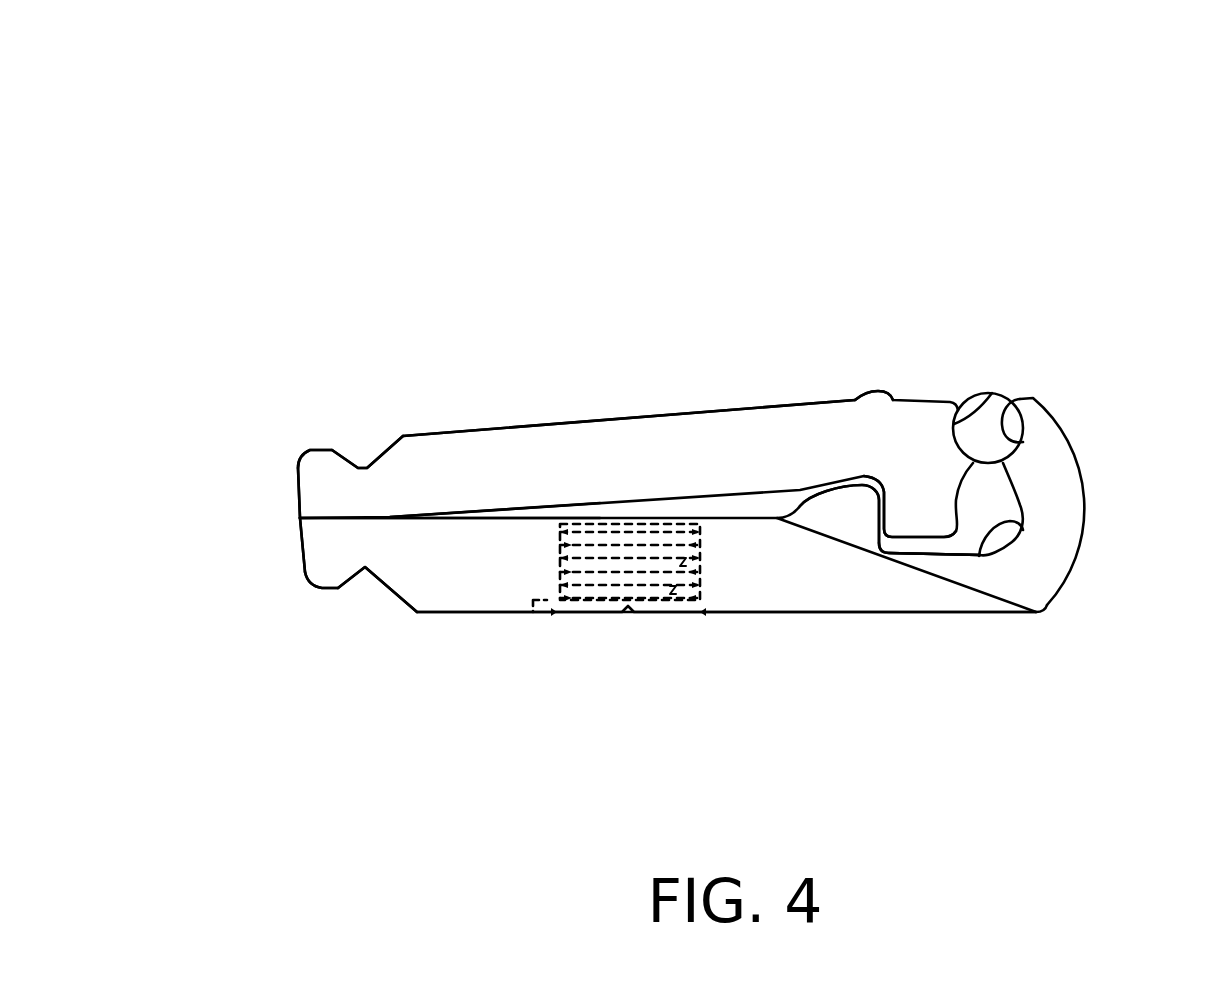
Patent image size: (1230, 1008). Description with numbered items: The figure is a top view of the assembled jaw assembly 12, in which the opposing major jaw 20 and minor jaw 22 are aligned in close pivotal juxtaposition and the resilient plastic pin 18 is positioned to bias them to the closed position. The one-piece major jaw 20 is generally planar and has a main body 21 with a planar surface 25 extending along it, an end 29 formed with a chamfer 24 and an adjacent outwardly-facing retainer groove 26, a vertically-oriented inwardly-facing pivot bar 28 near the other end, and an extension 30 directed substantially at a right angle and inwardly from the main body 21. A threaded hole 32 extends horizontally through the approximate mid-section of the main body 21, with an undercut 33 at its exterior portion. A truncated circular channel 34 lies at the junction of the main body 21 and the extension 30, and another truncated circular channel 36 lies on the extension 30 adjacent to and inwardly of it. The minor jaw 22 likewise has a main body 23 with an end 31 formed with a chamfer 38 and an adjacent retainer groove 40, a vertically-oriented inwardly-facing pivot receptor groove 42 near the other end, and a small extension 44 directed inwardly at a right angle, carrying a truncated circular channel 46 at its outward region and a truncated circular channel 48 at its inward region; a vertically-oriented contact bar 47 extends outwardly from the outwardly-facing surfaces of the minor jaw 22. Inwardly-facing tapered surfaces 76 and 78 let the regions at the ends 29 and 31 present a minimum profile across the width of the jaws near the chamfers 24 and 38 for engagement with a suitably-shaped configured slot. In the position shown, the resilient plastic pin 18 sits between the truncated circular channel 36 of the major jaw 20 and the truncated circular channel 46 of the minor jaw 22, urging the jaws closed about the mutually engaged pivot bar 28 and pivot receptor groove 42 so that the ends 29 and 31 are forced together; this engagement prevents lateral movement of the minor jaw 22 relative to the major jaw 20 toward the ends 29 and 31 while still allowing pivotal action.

The jaw assembly 12 is at (223, 173).
The resilient plastic pin 18 is at (1007, 400).
The major jaw 20 is at (772, 615).
The main body 21 is at (762, 580).
The minor jaw 22 is at (670, 402).
The main body 23 is at (703, 437).
The chamfer 24 is at (315, 582).
The planar surface 25 is at (880, 613).
The retainer groove 26 is at (372, 572).
The pivot bar 28 is at (867, 510).
The end 29 is at (302, 545).
The extension 30 is at (1060, 556).
The end 31 is at (300, 490).
The threaded hole 32 is at (655, 615).
The undercut 33 is at (536, 602).
The truncated circular channel 34 is at (980, 558).
The truncated circular channel 36 is at (1010, 400).
The chamfer 38 is at (308, 452).
The retainer groove 40 is at (365, 462).
The pivot receptor groove 42 is at (892, 400).
The small extension 44 is at (922, 520).
The truncated circular channel 46 is at (990, 400).
The contact bar 47 is at (860, 472).
The truncated circular channel 48 is at (957, 493).
The tapered surface 76 is at (390, 522).
The tapered surface 78 is at (393, 511).